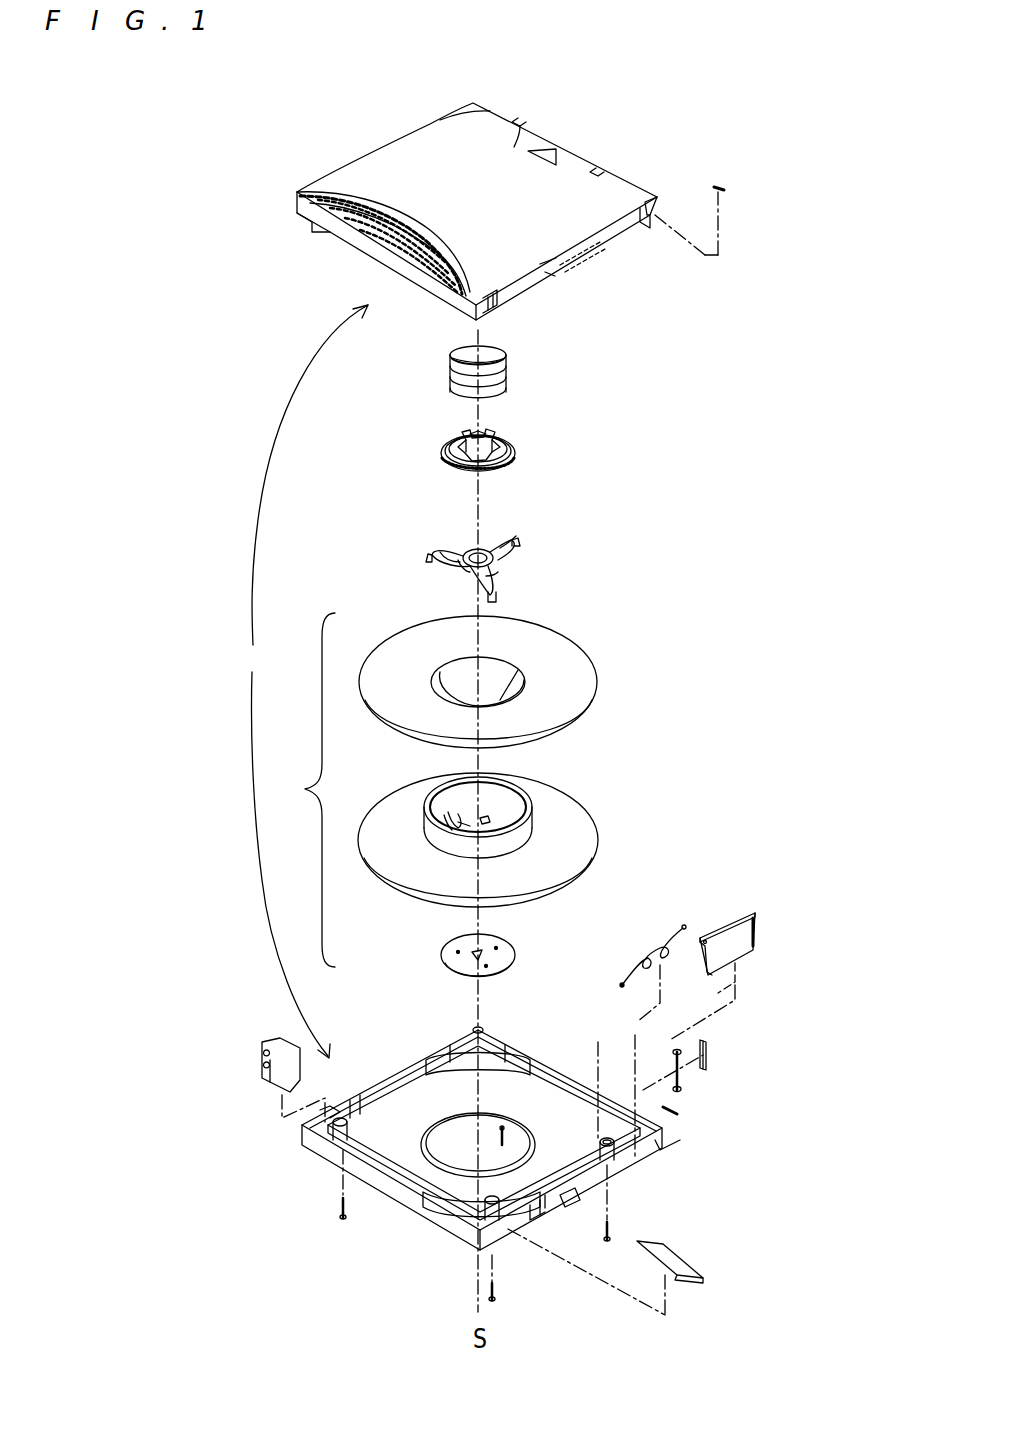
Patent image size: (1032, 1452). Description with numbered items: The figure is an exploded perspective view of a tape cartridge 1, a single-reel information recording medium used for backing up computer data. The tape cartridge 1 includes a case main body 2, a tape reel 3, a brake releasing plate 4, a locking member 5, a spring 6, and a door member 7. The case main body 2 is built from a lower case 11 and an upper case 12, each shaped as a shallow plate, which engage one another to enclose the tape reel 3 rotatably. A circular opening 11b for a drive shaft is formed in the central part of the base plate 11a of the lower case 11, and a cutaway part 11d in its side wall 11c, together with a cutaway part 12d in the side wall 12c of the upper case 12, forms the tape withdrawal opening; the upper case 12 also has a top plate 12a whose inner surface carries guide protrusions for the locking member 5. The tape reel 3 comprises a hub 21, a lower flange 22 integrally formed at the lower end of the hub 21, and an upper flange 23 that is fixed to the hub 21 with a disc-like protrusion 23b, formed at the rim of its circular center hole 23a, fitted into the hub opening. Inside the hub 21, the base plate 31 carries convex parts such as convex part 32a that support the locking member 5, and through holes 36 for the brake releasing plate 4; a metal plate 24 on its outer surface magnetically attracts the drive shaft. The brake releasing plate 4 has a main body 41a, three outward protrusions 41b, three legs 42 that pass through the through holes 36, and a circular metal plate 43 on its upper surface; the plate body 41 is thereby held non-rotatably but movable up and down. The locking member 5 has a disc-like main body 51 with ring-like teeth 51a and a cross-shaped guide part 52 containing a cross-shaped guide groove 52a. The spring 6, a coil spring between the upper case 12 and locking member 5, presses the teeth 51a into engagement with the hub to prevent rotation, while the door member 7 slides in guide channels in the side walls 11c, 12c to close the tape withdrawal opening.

The tape cartridge 1 is at (358, 110).
The case main body 2 is at (304, 681).
The tape reel 3 is at (305, 790).
The brake releasing plate 4 is at (486, 543).
The locking member 5 is at (491, 453).
The spring 6 is at (512, 374).
The door member 7 is at (718, 930).
The lower case 11 is at (496, 1161).
The base plate 11a is at (545, 1105).
The circular opening 11b is at (463, 1140).
The side wall 11c is at (556, 1205).
The cutaway part 11d is at (640, 1168).
The upper case 12 is at (590, 143).
The top plate 12a is at (518, 135).
The side wall 12c is at (548, 262).
The cutaway part 12d is at (632, 226).
The hub 21 is at (495, 815).
The lower flange 22 is at (398, 888).
The upper flange 23 is at (501, 663).
The circular center hole 23a is at (463, 680).
The disc-like protrusion 23b is at (502, 668).
The metal plate 24 is at (518, 950).
The base plate 31 is at (468, 818).
The convex part 32a is at (480, 840).
The through holes 36 is at (455, 820).
The arm body 41 is at (498, 564).
The main body 41a is at (466, 568).
The protrusions 41b is at (440, 556).
The legs 42 is at (430, 558).
The circular metal plate 43 is at (480, 552).
The main body 51 is at (528, 471).
The teeth 51a is at (500, 470).
The guide part 52 is at (484, 429).
The guide groove 52a is at (470, 432).